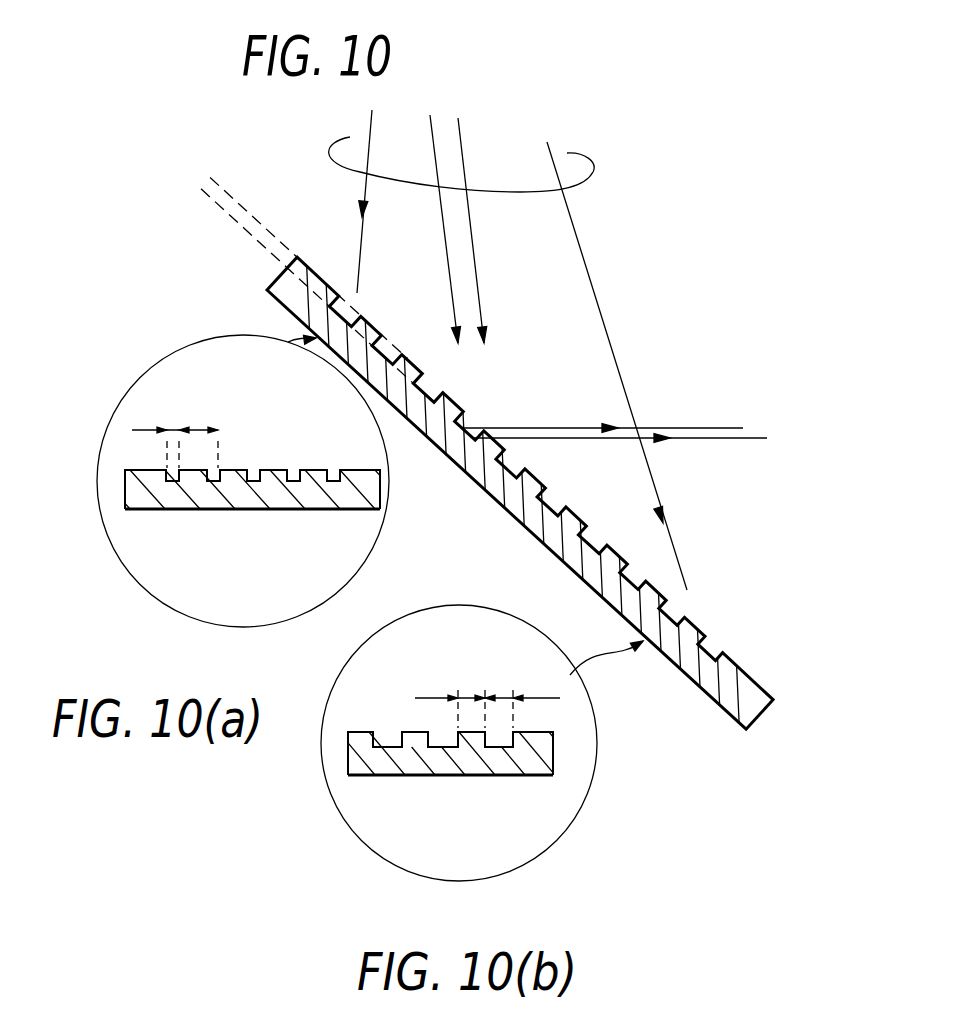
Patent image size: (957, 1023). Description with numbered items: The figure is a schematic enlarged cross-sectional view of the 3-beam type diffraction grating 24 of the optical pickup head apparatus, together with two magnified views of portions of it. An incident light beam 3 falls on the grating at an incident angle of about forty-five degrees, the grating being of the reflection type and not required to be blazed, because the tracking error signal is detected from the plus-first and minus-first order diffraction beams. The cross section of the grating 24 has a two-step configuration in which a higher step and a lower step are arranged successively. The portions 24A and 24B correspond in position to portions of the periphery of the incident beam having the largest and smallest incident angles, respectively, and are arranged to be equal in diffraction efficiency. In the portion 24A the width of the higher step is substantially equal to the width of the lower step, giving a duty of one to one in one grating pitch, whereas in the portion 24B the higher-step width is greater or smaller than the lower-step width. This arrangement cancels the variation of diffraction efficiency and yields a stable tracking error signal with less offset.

In FIG. 10, the light beam 3 is at (593, 173).
In FIG. 10, the 3-beam type diffraction grating 24 is at (713, 703).
The portion of the 3-beam type diffraction grating 24A is at (387, 860).
The portion of the 3-beam type diffraction grating 24B is at (182, 617).